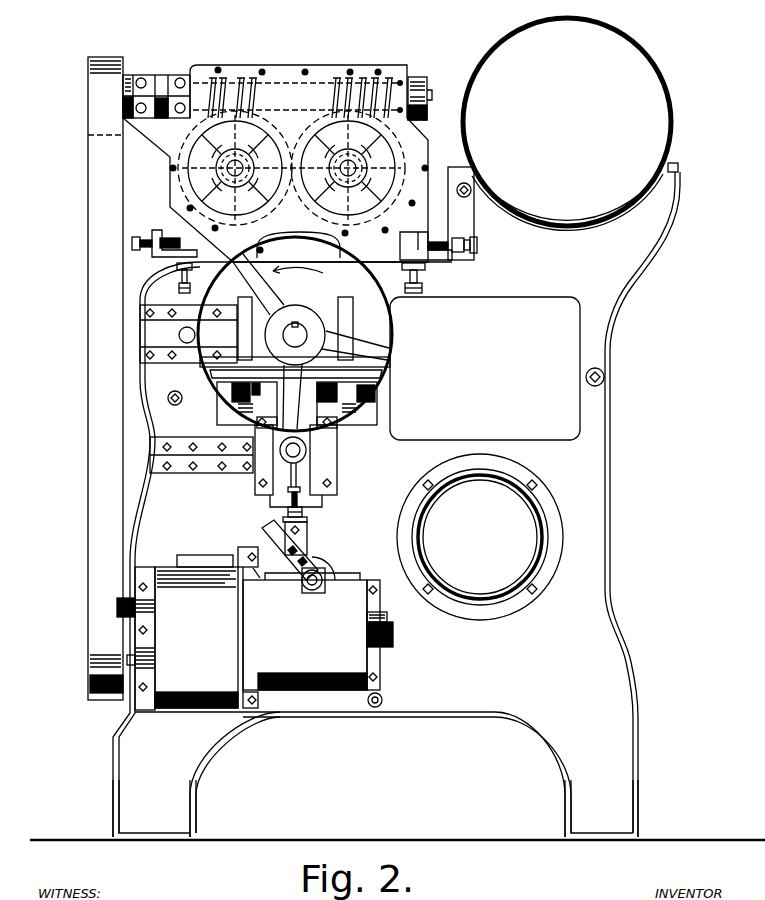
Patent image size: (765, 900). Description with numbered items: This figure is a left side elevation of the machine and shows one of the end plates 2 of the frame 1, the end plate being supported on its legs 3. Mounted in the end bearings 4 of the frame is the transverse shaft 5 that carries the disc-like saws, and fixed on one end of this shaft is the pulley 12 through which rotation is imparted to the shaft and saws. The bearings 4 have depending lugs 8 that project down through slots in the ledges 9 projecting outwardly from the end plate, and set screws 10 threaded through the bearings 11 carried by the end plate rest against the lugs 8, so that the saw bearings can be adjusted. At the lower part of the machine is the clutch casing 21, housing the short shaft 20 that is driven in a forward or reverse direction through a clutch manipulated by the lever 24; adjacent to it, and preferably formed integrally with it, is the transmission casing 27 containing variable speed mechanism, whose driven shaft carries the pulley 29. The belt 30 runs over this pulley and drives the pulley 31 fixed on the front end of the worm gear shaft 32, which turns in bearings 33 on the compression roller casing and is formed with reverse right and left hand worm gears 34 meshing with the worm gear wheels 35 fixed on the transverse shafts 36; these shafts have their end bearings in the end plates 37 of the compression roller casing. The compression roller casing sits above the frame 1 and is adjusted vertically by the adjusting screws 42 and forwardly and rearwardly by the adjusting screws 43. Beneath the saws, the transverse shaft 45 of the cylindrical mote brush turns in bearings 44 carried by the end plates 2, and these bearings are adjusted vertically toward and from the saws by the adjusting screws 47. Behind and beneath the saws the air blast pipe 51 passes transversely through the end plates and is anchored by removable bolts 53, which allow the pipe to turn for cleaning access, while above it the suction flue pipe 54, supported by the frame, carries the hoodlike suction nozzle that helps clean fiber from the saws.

The frame 1 is at (610, 571).
The end plates 2 is at (598, 497).
The legs 3 is at (190, 795).
The end bearings 4 is at (330, 326).
The transverse shaft 5 is at (297, 327).
The depending lugs 8 is at (297, 403).
The ledges 9 is at (378, 376).
The set screws 10 is at (222, 395).
The bearings 11 is at (237, 410).
The pulley 12 is at (393, 343).
The short shaft 20 is at (393, 627).
The clutch casing 21 is at (312, 640).
The lever 24 is at (268, 542).
The transmission casing 27 is at (197, 628).
The pulley 29 is at (115, 625).
The belt 30 is at (90, 370).
The pulley 31 is at (90, 135).
The worm gear shaft 32 is at (430, 95).
The bearings 33 is at (165, 75).
The worm gears 34 is at (240, 82).
The worm gear wheels 35 is at (268, 148).
The transverse shafts 36 is at (242, 177).
The end plates of the compression roller casing 37 is at (188, 138).
The adjusting screws 42 is at (178, 290).
The adjusting screws 43 is at (135, 243).
The bearings 44 is at (310, 500).
The transverse shaft 45 is at (307, 450).
The adjusting screws 47 is at (290, 497).
The air blast pipe 51 is at (537, 505).
The bolts 53 is at (428, 482).
The suction flue pipe 54 is at (652, 70).